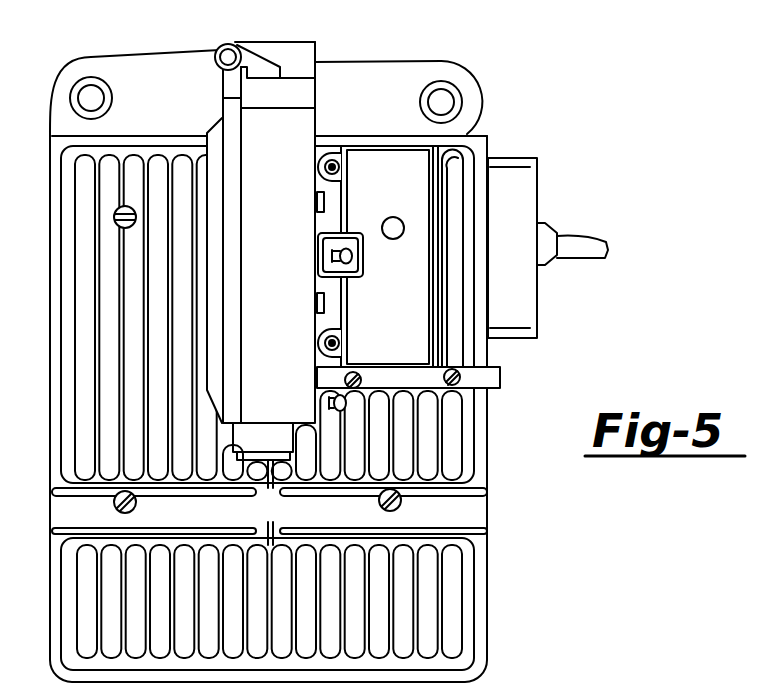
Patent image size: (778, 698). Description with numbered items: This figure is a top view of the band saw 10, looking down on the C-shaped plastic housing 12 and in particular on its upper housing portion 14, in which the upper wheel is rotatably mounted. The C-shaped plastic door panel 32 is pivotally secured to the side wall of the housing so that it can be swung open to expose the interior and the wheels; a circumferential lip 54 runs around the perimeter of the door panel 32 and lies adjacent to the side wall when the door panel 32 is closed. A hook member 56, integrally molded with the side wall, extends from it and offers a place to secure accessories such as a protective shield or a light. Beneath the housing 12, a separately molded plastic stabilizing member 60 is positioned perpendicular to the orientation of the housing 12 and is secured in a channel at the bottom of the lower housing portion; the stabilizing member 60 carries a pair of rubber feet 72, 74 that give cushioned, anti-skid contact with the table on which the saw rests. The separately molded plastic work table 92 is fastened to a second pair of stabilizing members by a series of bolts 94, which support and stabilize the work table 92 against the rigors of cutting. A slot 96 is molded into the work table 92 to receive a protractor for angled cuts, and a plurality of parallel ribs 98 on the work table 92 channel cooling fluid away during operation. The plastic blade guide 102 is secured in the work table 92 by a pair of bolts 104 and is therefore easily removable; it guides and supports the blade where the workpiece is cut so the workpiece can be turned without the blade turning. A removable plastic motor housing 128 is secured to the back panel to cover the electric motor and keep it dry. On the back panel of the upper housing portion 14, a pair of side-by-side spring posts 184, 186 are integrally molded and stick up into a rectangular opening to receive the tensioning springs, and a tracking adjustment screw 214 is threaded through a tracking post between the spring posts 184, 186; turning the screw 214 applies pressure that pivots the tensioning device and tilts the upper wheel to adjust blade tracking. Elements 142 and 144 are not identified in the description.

The band saw 10 is at (586, 116).
The housing 12 is at (323, 113).
The upper housing portion 14 is at (283, 117).
The door panel 32 is at (220, 117).
The circumferential lip 54 is at (233, 182).
The hook member 56 is at (262, 438).
The stabilizing member 60 is at (418, 77).
The rubber foot 72 is at (90, 88).
The rubber foot 74 is at (433, 107).
The work table 92 is at (494, 614).
The bolts 94 is at (117, 505).
The slot 96 is at (78, 508).
The parallel ribs 98 is at (457, 567).
The blade guide 102 is at (505, 378).
The bolts 104 is at (457, 382).
The motor housing 128 is at (527, 195).
The actuator 142 is at (352, 407).
The module housing 144 is at (418, 172).
The spring post 184 is at (317, 300).
The spring post 186 is at (317, 198).
The tracking adjustment screw 214 is at (350, 237).